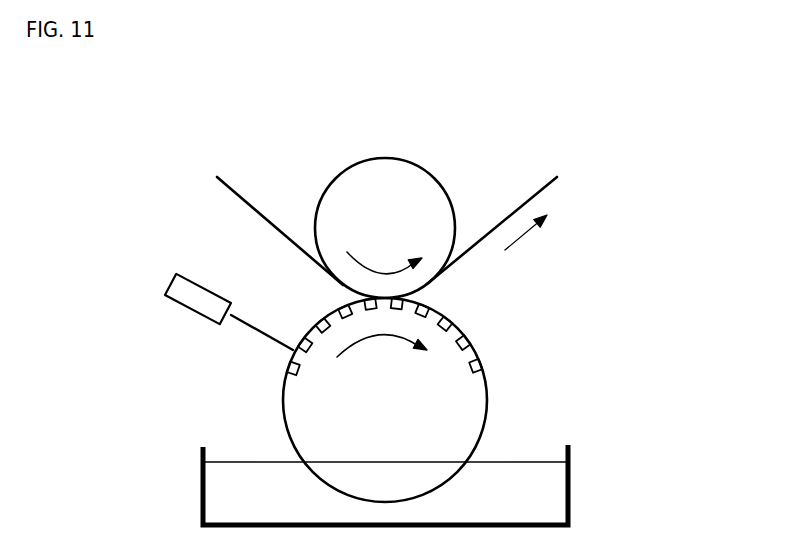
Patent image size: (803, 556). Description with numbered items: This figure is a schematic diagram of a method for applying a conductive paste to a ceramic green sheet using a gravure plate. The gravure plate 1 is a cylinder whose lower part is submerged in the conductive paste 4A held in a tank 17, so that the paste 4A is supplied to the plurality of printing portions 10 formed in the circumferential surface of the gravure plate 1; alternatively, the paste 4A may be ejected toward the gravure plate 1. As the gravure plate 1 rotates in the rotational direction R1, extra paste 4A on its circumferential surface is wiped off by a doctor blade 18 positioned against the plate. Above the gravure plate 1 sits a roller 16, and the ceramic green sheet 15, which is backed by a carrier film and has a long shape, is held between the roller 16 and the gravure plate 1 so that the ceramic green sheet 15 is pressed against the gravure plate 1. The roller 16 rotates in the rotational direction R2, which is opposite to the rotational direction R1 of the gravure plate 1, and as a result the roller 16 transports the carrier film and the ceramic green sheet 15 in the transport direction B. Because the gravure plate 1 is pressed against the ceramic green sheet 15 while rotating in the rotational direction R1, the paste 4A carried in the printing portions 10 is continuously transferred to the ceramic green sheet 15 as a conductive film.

The gravure plate 1 is at (490, 412).
The conductive paste 4A is at (597, 420).
The printing portions 10 is at (473, 340).
The ceramic green sheet 15 is at (547, 190).
The roller 16 is at (430, 170).
The tank 17 is at (569, 483).
The doctor blade 18 is at (187, 312).
The transport direction B is at (520, 238).
The rotational direction of the gravure plate R1 is at (376, 338).
The rotational direction of the roller R2 is at (381, 272).